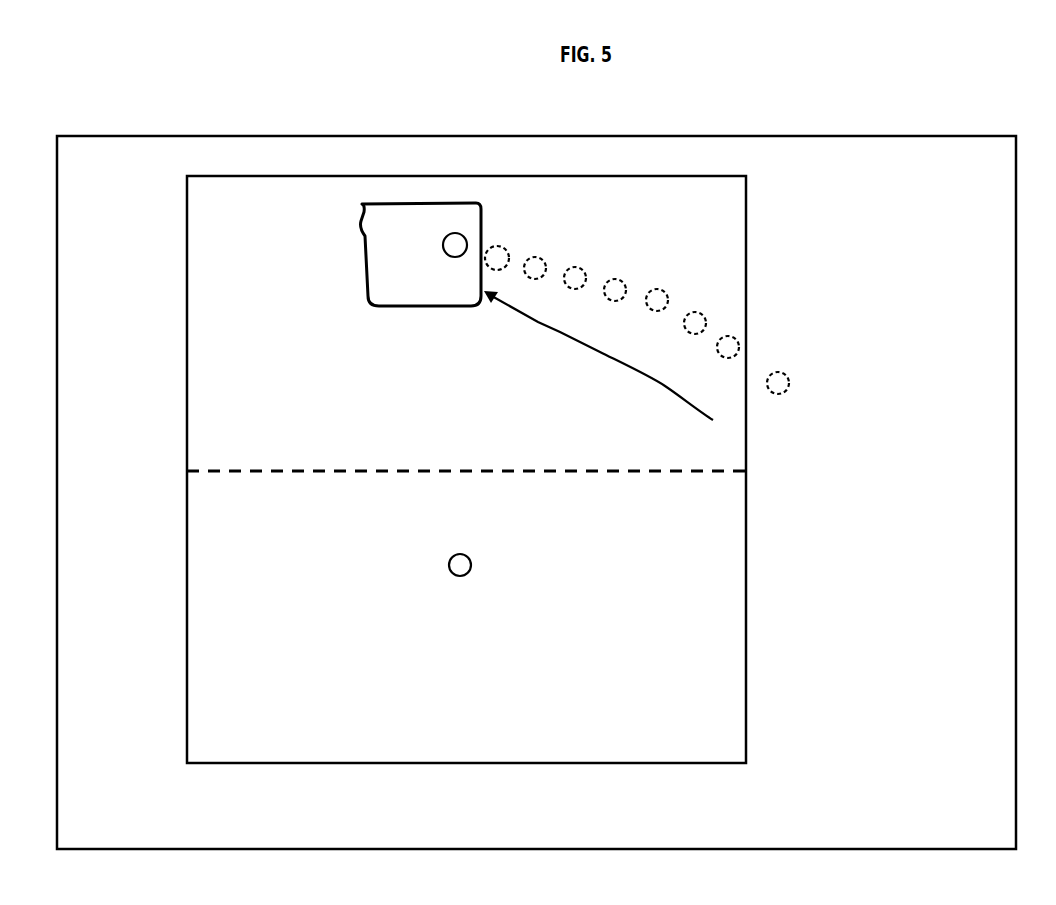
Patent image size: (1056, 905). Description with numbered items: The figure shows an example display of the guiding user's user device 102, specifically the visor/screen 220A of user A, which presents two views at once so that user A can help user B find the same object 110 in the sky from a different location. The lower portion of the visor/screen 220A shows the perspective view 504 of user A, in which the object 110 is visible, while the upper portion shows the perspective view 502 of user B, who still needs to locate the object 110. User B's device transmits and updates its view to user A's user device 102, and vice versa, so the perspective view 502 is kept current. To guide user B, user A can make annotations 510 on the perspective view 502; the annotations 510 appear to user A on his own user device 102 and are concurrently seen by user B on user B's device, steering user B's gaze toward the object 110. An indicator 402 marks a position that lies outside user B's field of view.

The user device 102 is at (430, 134).
The object 110 is at (457, 242).
The visor/screen 220A is at (186, 736).
The out of field of view indicator 402 is at (785, 392).
The perspective view of user B 502 is at (746, 220).
The perspective view of user A 504 is at (748, 637).
The annotations 510 is at (538, 322).